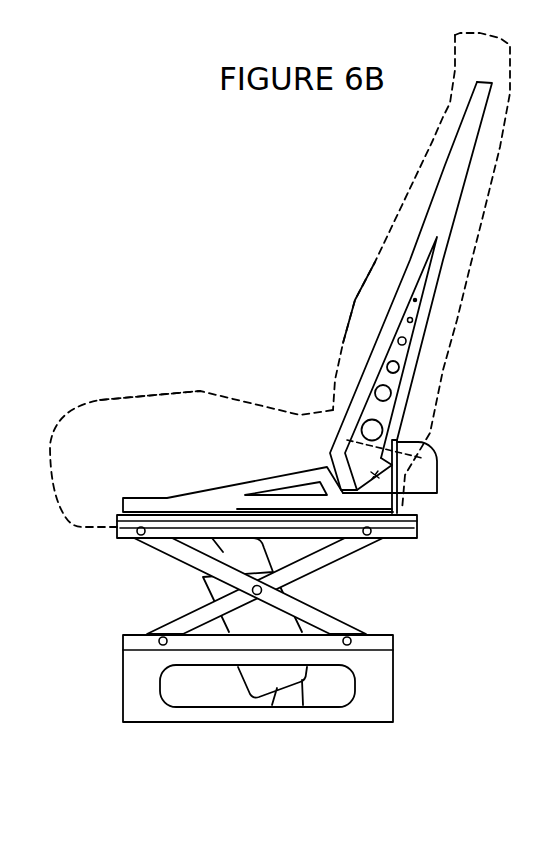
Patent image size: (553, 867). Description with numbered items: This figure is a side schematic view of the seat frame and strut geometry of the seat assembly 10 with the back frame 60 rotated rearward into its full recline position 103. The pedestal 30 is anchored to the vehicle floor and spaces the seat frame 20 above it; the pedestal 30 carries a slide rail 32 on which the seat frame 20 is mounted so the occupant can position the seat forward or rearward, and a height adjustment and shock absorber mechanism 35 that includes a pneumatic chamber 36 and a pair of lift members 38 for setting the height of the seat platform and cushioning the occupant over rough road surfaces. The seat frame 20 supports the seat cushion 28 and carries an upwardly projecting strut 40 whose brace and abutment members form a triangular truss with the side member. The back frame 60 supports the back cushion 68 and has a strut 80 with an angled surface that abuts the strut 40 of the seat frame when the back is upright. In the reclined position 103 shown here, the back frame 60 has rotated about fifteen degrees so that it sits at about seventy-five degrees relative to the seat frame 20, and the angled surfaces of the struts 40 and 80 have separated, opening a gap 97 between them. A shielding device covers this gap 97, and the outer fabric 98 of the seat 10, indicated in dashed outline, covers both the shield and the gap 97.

The seat frame and seat belt assembly 10 is at (392, 187).
The full recline position 103 is at (372, 215).
The strut 80 is at (393, 317).
The back cushion 68 is at (350, 330).
The back frame 60 is at (427, 307).
The gap 97 is at (330, 455).
The outer fabric 98 is at (97, 403).
The seat cushion 28 is at (148, 402).
The seat frame portion 20 is at (133, 502).
The strut 40 is at (250, 488).
The slide rail 32 is at (117, 527).
The height adjustment mechanism 35 is at (212, 586).
The lift members 38 is at (315, 618).
The pneumatic chamber 36 is at (247, 632).
The pedestal 30 is at (110, 667).